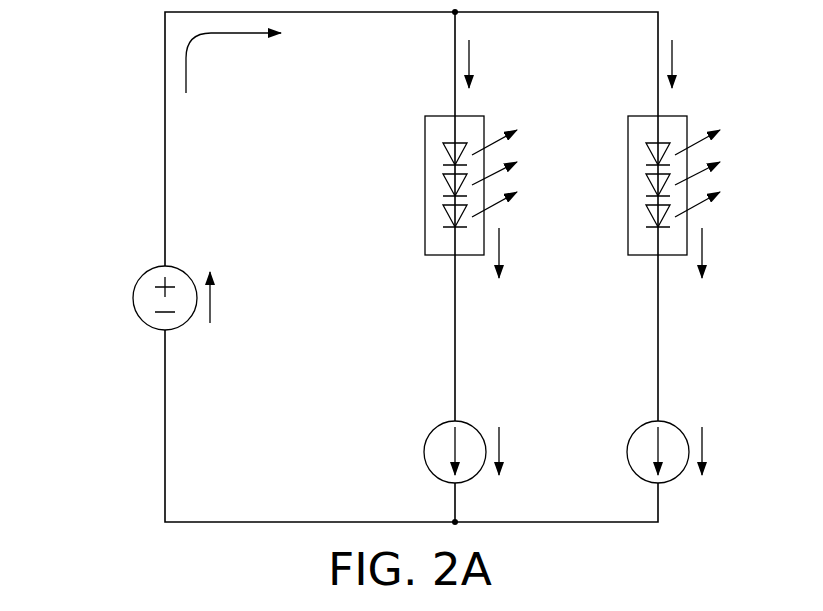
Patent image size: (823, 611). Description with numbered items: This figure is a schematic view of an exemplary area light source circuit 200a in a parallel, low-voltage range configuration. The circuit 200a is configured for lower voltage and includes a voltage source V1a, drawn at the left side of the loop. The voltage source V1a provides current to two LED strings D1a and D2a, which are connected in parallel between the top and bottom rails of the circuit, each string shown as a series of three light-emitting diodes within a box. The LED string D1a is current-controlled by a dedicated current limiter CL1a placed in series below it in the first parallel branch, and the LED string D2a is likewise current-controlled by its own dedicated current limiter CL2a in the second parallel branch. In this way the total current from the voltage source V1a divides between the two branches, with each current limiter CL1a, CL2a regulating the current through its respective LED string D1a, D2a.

The area light source circuit 200a is at (118, 90).
The voltage source V1a is at (107, 380).
The LED string D1a is at (425, 186).
The LED string D2a is at (628, 185).
The current limiter CL1a is at (424, 453).
The current limiter CL2a is at (642, 424).